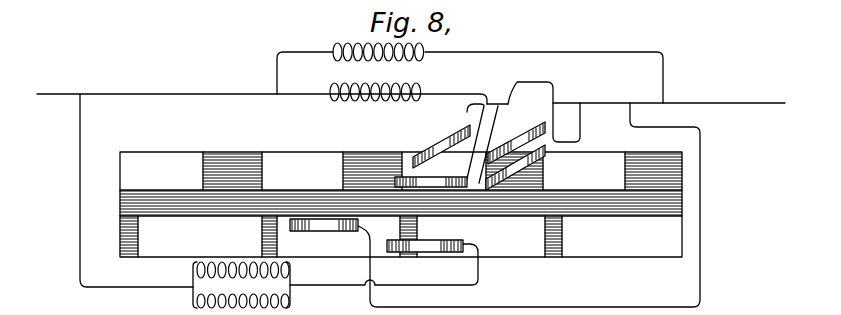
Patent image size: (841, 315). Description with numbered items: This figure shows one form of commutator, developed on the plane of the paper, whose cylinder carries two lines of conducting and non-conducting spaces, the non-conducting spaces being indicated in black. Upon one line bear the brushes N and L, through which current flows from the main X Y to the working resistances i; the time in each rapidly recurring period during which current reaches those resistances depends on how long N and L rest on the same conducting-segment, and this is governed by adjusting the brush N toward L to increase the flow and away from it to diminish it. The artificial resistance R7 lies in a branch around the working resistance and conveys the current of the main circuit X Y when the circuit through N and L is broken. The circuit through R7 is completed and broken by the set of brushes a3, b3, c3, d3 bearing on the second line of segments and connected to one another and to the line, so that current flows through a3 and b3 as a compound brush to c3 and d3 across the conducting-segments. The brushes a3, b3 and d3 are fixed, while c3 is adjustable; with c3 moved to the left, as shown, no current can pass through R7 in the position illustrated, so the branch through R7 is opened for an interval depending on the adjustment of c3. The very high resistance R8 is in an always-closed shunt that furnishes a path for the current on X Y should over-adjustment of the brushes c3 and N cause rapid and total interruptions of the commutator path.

The main Y is at (60, 88).
The main X is at (785, 108).
The high resistance shunt R8 is at (470, 73).
The artificial resistance R7 is at (375, 99).
The brush a3 is at (441, 146).
The brush b3 is at (516, 143).
The adjustable brush c3 is at (431, 174).
The brush d3 is at (542, 154).
The brush L is at (324, 235).
The adjustable brush N is at (429, 254).
The working resistances i is at (284, 285).